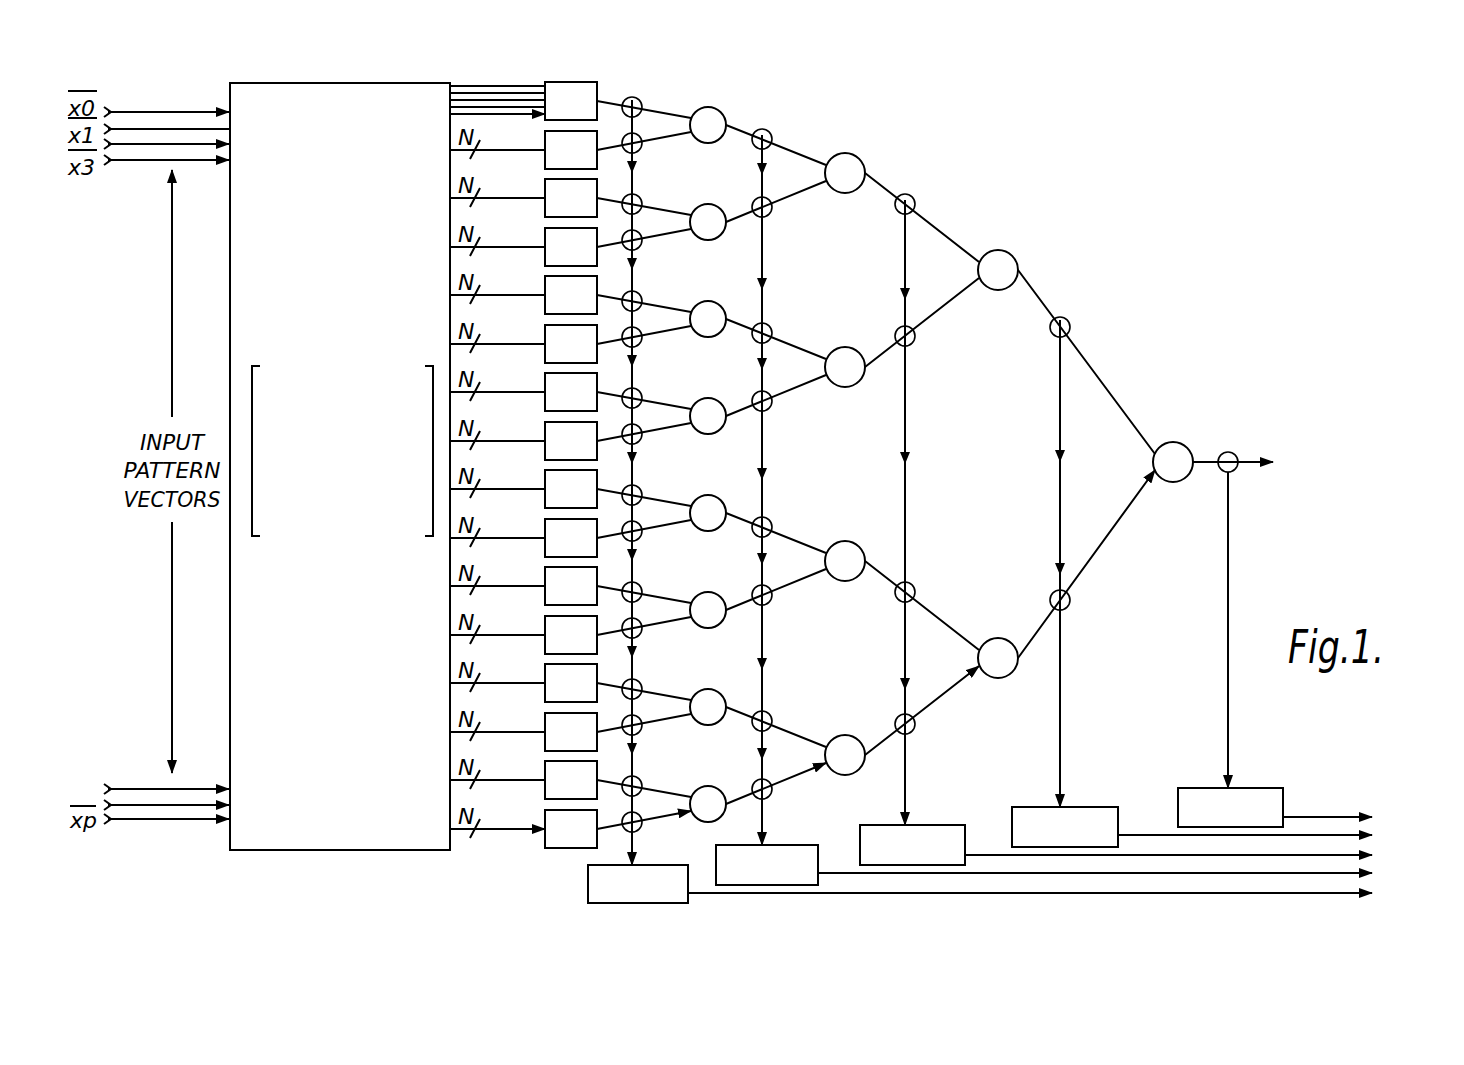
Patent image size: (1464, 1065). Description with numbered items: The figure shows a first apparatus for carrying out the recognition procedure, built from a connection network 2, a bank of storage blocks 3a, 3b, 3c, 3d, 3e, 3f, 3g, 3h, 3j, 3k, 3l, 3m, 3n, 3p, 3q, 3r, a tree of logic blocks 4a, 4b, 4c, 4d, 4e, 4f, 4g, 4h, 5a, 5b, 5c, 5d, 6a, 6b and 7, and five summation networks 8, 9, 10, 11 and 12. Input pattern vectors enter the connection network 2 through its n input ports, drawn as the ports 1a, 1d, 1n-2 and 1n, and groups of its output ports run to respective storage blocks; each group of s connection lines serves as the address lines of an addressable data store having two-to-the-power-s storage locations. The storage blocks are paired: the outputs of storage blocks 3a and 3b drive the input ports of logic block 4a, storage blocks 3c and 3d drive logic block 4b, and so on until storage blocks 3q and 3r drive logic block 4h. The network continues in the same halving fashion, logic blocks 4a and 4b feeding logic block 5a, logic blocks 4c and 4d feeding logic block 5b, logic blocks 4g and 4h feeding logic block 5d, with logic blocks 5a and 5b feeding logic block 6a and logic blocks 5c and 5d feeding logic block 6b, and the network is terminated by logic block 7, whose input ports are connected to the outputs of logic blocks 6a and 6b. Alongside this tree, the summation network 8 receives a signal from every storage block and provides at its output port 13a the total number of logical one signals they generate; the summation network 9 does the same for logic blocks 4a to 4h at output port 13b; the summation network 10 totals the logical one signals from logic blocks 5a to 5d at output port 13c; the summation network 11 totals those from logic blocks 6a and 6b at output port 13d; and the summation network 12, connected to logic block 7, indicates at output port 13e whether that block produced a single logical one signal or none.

The input port 1a is at (134, 112).
The input port 1d is at (140, 163).
The input port 1n-2 is at (148, 789).
The input port 1n is at (155, 823).
The connection network 2 is at (302, 851).
The storage block 3a is at (600, 88).
The storage block 3b is at (546, 165).
The storage block 3c is at (546, 213).
The storage block 3d is at (546, 262).
The storage block 3e is at (546, 310).
The storage block 3f is at (546, 359).
The storage block 3g is at (546, 407).
The storage block 3h is at (546, 456).
The storage block 3j is at (546, 504).
The storage block 3k is at (546, 553).
The storage block 3l is at (546, 601).
The storage block 3m is at (546, 650).
The storage block 3n is at (546, 698).
The storage block 3p is at (546, 747).
The storage block 3q is at (546, 795).
The storage block 3r is at (546, 844).
The logic block 4a is at (722, 112).
The logic block 4b is at (699, 203).
The logic block 4c is at (699, 300).
The logic block 4d is at (699, 397).
The logic block 4e is at (699, 494).
The logic block 4f is at (699, 591).
The logic block 4g is at (699, 688).
The logic block 4h is at (699, 785).
The logic block 5a is at (863, 162).
The logic block 5b is at (836, 347).
The logic block 5c is at (836, 541).
The logic block 5d is at (836, 735).
The logic block 6a is at (1019, 262).
The logic block 6b is at (998, 637).
The logic block 7 is at (1183, 444).
The summation network 8 is at (588, 870).
The summation network 9 is at (790, 845).
The summation network 10 is at (930, 825).
The summation network 11 is at (1084, 807).
The summation network 12 is at (1260, 788).
The output port 13a is at (1378, 894).
The output port 13b is at (1380, 874).
The output port 13c is at (1378, 854).
The output port 13d is at (1376, 832).
The output port 13e is at (1374, 812).